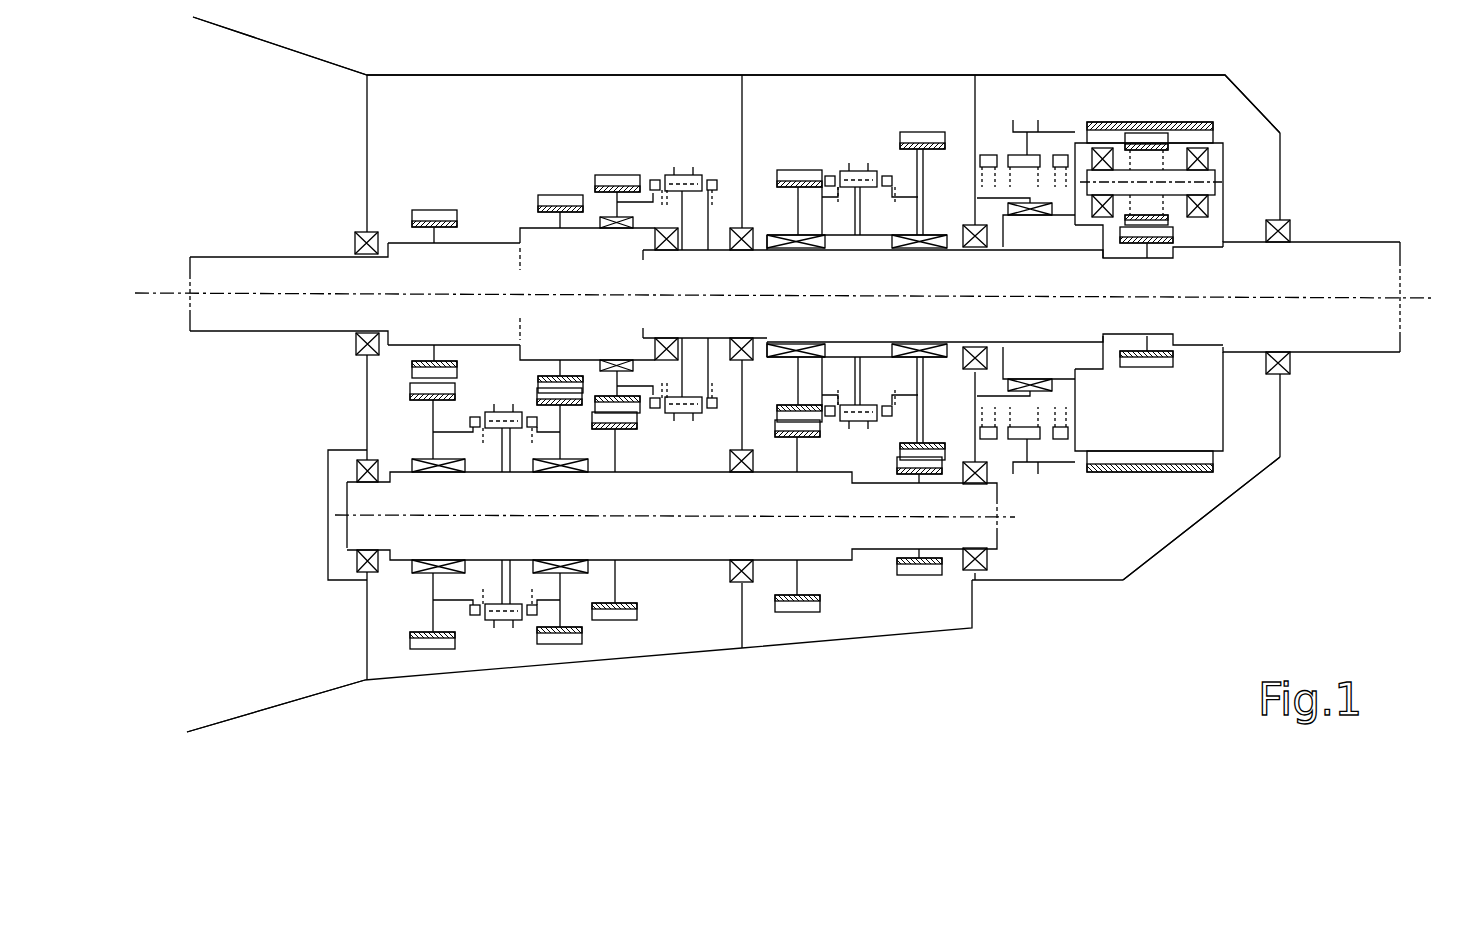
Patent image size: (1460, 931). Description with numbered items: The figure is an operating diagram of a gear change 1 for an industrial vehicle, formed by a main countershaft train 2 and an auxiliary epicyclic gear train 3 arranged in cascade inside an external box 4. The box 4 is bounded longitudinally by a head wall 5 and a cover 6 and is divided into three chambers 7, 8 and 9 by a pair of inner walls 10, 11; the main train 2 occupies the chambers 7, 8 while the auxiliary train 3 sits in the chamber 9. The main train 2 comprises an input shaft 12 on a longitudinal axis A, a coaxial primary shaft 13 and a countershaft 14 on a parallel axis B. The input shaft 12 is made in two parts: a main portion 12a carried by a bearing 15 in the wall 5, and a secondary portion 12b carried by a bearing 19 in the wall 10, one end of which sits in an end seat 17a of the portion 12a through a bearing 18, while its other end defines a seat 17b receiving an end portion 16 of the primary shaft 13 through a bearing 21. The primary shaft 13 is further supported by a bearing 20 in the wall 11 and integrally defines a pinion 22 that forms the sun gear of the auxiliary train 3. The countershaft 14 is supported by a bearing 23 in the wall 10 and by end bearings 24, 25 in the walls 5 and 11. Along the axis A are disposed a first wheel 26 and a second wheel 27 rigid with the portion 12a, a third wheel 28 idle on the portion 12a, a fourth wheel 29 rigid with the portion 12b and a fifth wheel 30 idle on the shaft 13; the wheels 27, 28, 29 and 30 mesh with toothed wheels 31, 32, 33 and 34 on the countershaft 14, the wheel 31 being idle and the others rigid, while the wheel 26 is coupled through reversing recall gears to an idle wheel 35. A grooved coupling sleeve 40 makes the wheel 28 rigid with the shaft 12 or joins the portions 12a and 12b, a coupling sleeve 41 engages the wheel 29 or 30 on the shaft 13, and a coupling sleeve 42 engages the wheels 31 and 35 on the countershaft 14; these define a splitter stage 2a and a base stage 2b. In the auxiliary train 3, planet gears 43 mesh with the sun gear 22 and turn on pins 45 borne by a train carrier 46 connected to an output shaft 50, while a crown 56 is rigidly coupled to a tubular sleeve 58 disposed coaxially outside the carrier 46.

The gear change 1 is at (680, 675).
The main countershaft train 2 is at (527, 655).
The splitter stage 2a is at (493, 162).
The base stage 2b is at (820, 110).
The auxiliary epicyclic gear train 3 is at (1153, 522).
The external box 4 is at (1222, 500).
The head wall 5 is at (367, 162).
The cover 6 is at (1281, 180).
The chamber 7 is at (404, 666).
The chamber 8 is at (875, 626).
The chamber 9 is at (1097, 568).
The inner wall 10 is at (742, 103).
The inner wall 11 is at (975, 113).
The input shaft 12 is at (257, 273).
The main portion 12a is at (318, 268).
The secondary portion 12b is at (757, 273).
The primary shaft 13 is at (1153, 268).
The countershaft 14 is at (848, 553).
The bearing 15 is at (356, 340).
The end portion 16 is at (817, 270).
The end seat 17a is at (655, 242).
The seat 17b is at (792, 350).
The bearing 18 is at (665, 250).
The bearing 19 is at (726, 232).
The bearing 20 is at (970, 228).
The bearing 21 is at (828, 352).
The pinion 22 is at (1147, 368).
The bearing 23 is at (730, 584).
The bearing 24 is at (355, 555).
The bearing 25 is at (985, 556).
The first wheel 26 is at (428, 212).
The second wheel 27 is at (553, 197).
The third wheel 28 is at (615, 177).
The fourth wheel 29 is at (795, 170).
The fifth wheel 30 is at (920, 132).
The toothed wheel 31 is at (560, 644).
The toothed wheel 32 is at (617, 622).
The toothed wheel 33 is at (805, 618).
The toothed wheel 34 is at (918, 579).
The wheel 35 is at (440, 648).
The grooved coupling sleeve 40 is at (685, 178).
The coupling sleeve 41 is at (862, 172).
The coupling sleeve 42 is at (500, 620).
The planet gears 43 is at (1158, 140).
The pins 45 is at (1175, 175).
The train carrier 46 is at (1068, 130).
The output shaft 50 is at (1383, 265).
The crown 56 is at (1125, 122).
The tubular sleeve 58 is at (1015, 155).
The longitudinal axis A is at (1432, 296).
The axis B is at (340, 515).